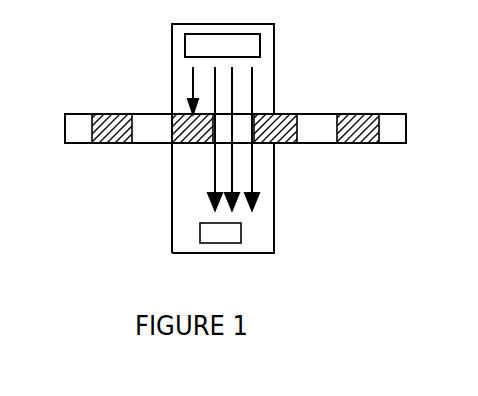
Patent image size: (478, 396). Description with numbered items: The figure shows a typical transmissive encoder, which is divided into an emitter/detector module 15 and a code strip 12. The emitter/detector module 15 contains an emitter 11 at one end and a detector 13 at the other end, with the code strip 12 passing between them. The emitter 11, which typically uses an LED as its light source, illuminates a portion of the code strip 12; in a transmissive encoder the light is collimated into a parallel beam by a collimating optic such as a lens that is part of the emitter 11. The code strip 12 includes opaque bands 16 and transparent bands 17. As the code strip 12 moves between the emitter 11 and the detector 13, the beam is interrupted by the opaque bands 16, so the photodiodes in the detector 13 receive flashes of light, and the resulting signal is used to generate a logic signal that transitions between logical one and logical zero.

The emitter 11 is at (186, 46).
The code strip 12 is at (401, 143).
The detector 13 is at (235, 240).
The emitter/detector module 15 is at (275, 54).
The opaque bands 16 is at (351, 143).
The transparent bands 17 is at (152, 143).